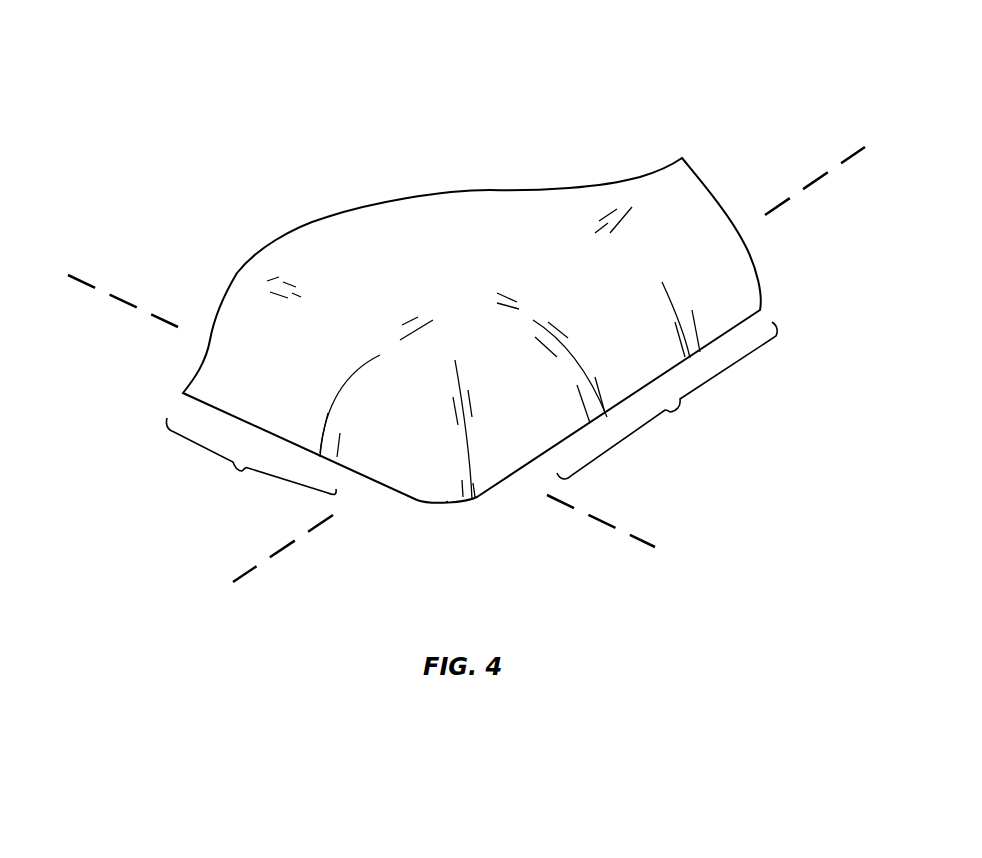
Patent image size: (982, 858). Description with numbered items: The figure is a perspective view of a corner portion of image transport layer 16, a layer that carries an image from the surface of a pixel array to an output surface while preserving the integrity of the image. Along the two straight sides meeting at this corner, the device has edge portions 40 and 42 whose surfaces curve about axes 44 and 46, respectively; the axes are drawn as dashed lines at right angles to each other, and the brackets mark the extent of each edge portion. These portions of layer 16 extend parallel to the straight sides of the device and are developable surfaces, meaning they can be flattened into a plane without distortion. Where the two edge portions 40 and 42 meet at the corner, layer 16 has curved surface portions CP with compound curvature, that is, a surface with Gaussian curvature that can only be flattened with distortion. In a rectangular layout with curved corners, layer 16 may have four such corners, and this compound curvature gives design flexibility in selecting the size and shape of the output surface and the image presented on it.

The image transport layer 16 is at (567, 108).
The edge portion 40 is at (251, 458).
The edge portion 42 is at (667, 400).
The axis 44 is at (85, 283).
The axis 46 is at (853, 153).
The curved surface portions CP is at (424, 457).